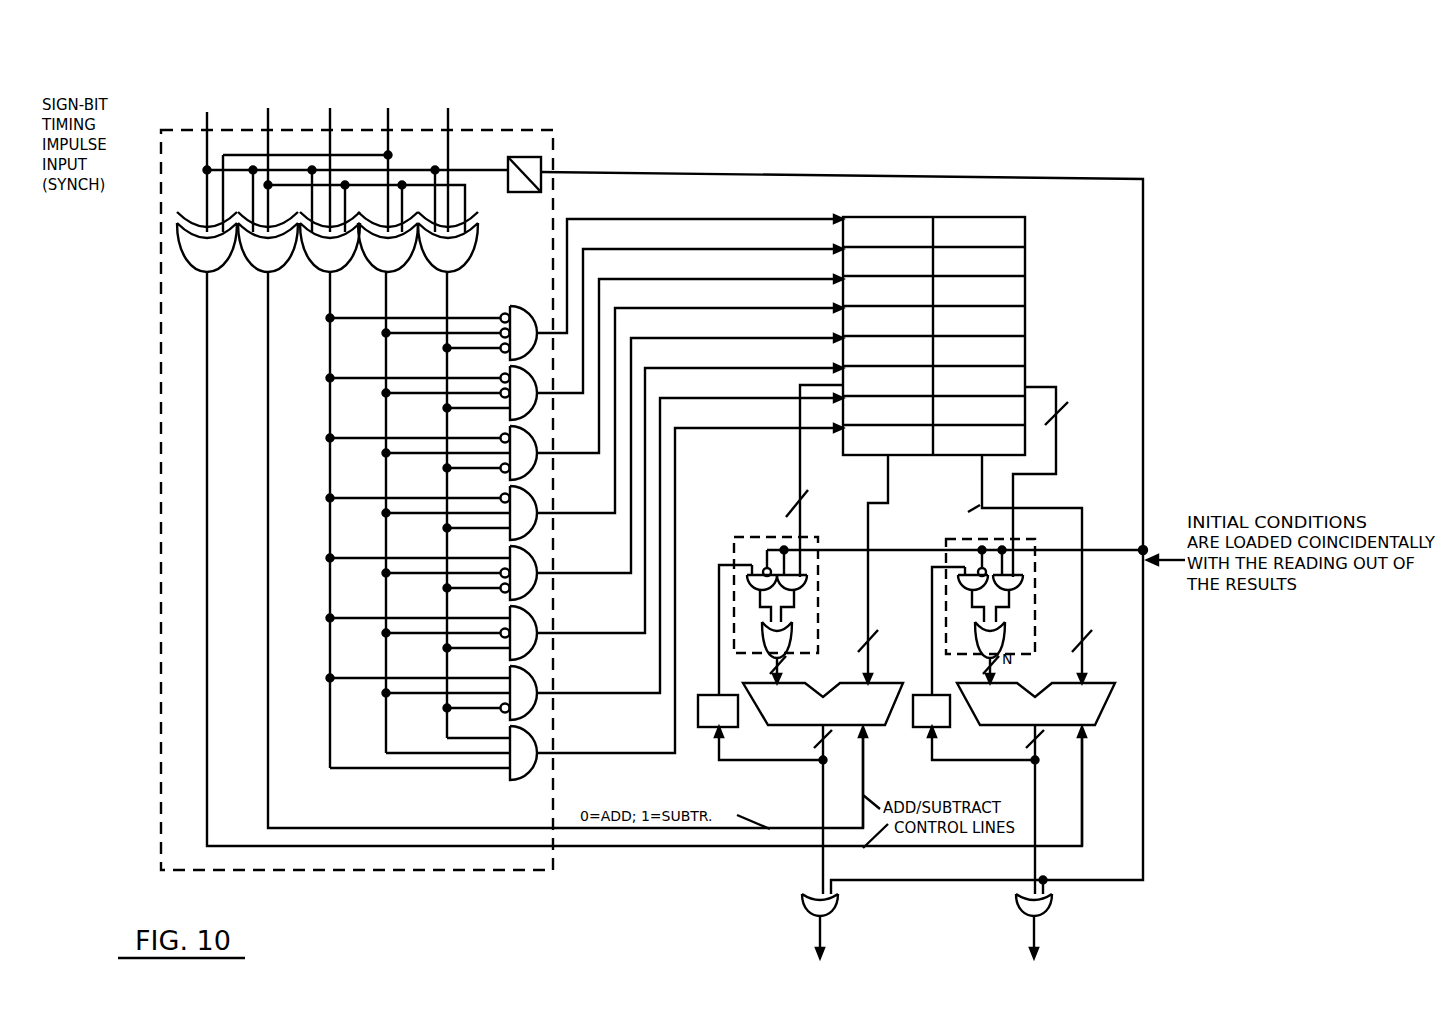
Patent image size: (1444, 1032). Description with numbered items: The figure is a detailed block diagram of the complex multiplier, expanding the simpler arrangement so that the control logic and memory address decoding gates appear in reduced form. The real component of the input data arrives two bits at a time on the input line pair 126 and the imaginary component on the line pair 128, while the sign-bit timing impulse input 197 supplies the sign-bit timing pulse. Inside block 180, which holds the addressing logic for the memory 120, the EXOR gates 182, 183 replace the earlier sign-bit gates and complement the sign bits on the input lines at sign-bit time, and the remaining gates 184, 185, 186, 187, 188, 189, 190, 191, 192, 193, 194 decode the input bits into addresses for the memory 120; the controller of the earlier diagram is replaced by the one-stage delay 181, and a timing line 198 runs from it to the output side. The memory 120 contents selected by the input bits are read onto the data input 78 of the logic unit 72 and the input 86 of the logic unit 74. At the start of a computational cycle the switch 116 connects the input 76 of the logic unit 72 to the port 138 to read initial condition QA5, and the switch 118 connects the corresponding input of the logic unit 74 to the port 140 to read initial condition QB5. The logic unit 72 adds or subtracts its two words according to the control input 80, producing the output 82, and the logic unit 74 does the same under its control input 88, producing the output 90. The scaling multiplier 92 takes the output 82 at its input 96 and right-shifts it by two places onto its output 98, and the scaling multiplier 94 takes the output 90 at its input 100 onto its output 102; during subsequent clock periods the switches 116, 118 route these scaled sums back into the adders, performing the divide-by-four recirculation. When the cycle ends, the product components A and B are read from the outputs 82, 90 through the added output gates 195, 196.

The sign-bit timing impulse input (synch) 197 is at (205, 122).
The input line pair 126 is at (360, 96).
The line pair 128 is at (498, 96).
The block 180 is at (556, 158).
The 1-stage delay 181 is at (531, 188).
The gate 182 is at (222, 255).
The gate 183 is at (282, 255).
The gate 184 is at (335, 258).
The gate 185 is at (395, 260).
The gate 186 is at (455, 258).
The gate 187 is at (512, 352).
The gate 188 is at (512, 412).
The gate 189 is at (512, 472).
The gate 190 is at (512, 532).
The gate 191 is at (512, 592).
The gate 192 is at (512, 652).
The gate 193 is at (512, 712).
The gate 194 is at (503, 772).
The timing line 198 is at (1143, 181).
The memory 120 is at (1042, 312).
The port 140 is at (1056, 456).
The port 138 is at (803, 517).
The switch 116 is at (735, 537).
The switch 118 is at (1010, 615).
The data input 78 is at (866, 596).
The input 86 is at (1082, 580).
The data input 76 is at (790, 665).
The output 98 is at (718, 632).
The output 102 is at (930, 598).
The scaling multiplier 92 is at (732, 729).
The scaling multiplier 94 is at (924, 724).
The input 96 is at (740, 762).
The input 100 is at (950, 762).
The logic unit 72 is at (887, 683).
The logic unit 74 is at (1083, 718).
The output 82 is at (834, 809).
The output 90 is at (1046, 809).
The control input 80 is at (866, 760).
The input 88 is at (1085, 760).
The output gate 195 is at (808, 906).
The output gate 196 is at (1046, 907).